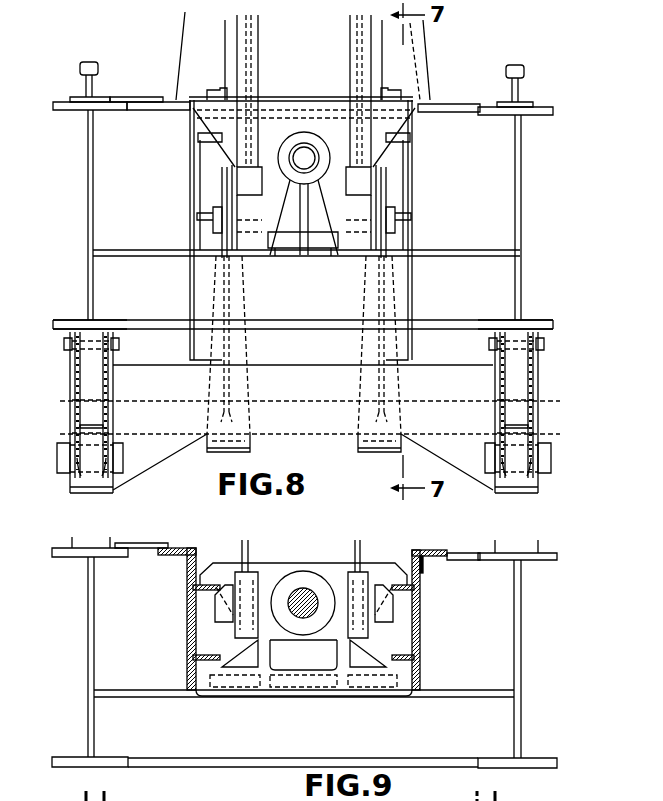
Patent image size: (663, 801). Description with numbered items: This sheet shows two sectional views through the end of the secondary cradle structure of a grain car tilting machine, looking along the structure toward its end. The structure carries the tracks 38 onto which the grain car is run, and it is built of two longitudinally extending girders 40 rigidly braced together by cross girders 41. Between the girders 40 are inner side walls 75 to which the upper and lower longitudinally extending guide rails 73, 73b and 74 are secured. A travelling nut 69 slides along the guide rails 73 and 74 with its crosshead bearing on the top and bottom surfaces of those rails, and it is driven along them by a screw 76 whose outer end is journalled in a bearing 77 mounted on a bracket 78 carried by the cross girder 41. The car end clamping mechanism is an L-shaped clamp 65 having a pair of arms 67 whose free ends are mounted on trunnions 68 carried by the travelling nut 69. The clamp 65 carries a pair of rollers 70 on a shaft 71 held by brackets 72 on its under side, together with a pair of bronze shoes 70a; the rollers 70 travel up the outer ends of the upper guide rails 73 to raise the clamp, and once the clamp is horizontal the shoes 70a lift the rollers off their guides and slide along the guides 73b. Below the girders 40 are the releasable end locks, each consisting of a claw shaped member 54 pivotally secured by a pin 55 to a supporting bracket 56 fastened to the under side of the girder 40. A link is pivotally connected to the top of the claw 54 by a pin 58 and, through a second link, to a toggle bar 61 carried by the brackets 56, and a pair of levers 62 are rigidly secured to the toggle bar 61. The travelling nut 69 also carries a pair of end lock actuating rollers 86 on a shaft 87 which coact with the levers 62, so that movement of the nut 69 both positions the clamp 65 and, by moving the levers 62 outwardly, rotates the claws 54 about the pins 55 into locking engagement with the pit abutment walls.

In FIG. 8, the tracks 38 is at (524, 70).
In FIG. 8, the girders 40 is at (520, 188).
In FIG. 9, the girders 40 is at (523, 650).
In FIG. 8, the cross girders 41 is at (503, 283).
In FIG. 9, the cross girders 41 is at (500, 725).
In FIG. 8, the claw shaped members 54 is at (87, 383).
In FIG. 8, the pin 55 is at (57, 463).
In FIG. 8, the supporting bracket 56 is at (110, 382).
In FIG. 8, the pin 58 is at (64, 343).
In FIG. 8, the toggle bar 61 is at (323, 425).
In FIG. 8, the levers 62 is at (362, 376).
In FIG. 8, the L-shaped clamp 65 is at (436, 50).
In FIG. 8, the arms 67 is at (357, 40).
In FIG. 9, the arms 67 is at (360, 540).
In FIG. 9, the trunnions 68 is at (228, 600).
In FIG. 9, the travelling nut 69 is at (395, 563).
In FIG. 8, the rollers 70 is at (215, 89).
In FIG. 8, the bronze shoes 70a is at (413, 100).
In FIG. 8, the shaft 71 is at (292, 115).
In FIG. 8, the brackets 72 is at (232, 108).
In FIG. 8, the upper guide rails 73 is at (412, 150).
In FIG. 9, the upper guide rails 73 is at (420, 585).
In FIG. 8, the guides 73b is at (420, 105).
In FIG. 9, the guides 73b is at (422, 550).
In FIG. 8, the lower guide rails 74 is at (411, 222).
In FIG. 9, the lower guide rails 74 is at (420, 662).
In FIG. 8, the inner side walls 75 is at (414, 182).
In FIG. 9, the inner side walls 75 is at (422, 622).
In FIG. 8, the screw 76 is at (311, 157).
In FIG. 9, the screw 76 is at (302, 618).
In FIG. 8, the bearing 77 is at (293, 142).
In FIG. 8, the bracket 78 is at (290, 212).
In FIG. 8, the end lock actuating rollers 86 is at (222, 237).
In FIG. 8, the shaft 87 is at (323, 228).